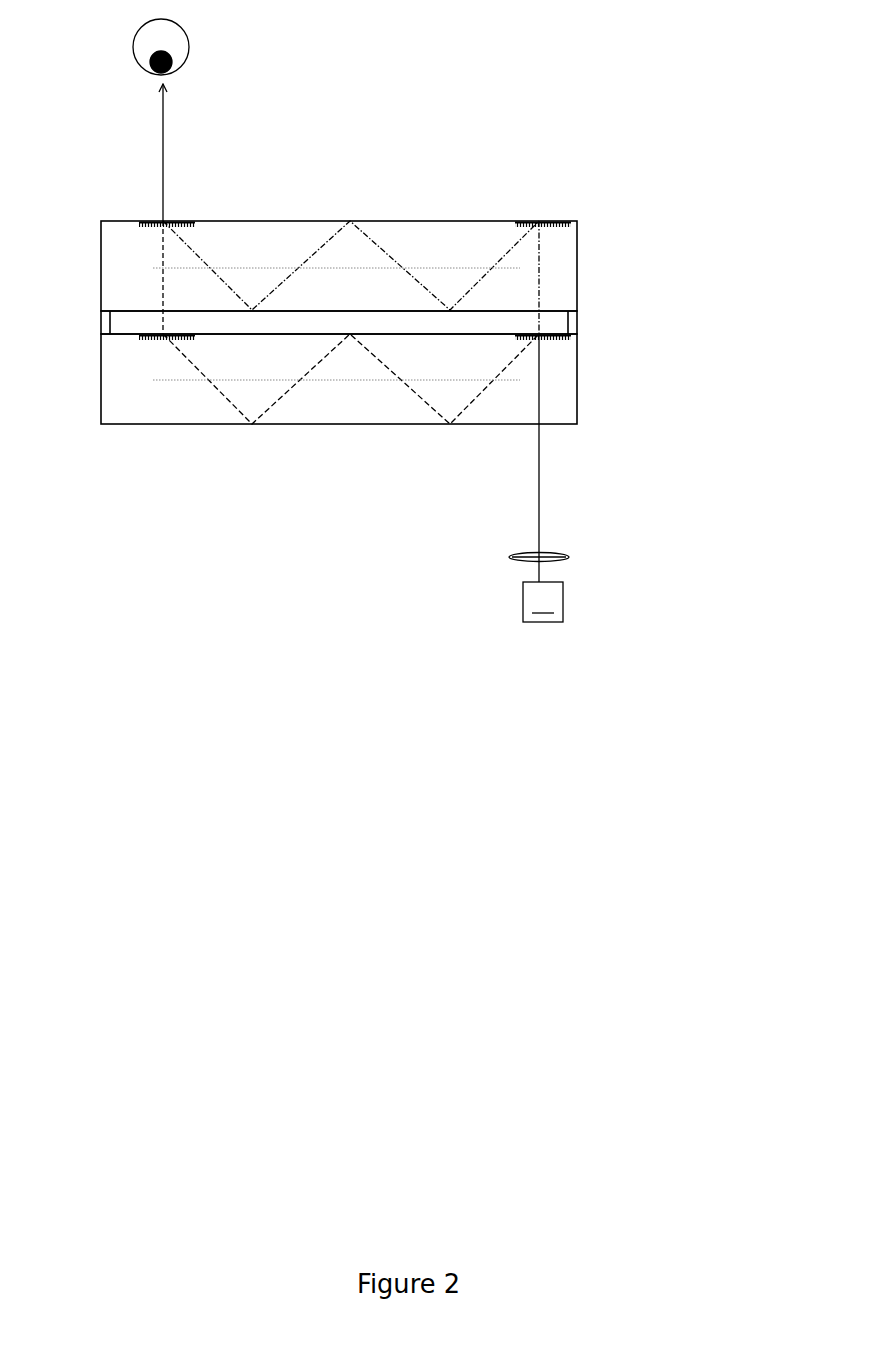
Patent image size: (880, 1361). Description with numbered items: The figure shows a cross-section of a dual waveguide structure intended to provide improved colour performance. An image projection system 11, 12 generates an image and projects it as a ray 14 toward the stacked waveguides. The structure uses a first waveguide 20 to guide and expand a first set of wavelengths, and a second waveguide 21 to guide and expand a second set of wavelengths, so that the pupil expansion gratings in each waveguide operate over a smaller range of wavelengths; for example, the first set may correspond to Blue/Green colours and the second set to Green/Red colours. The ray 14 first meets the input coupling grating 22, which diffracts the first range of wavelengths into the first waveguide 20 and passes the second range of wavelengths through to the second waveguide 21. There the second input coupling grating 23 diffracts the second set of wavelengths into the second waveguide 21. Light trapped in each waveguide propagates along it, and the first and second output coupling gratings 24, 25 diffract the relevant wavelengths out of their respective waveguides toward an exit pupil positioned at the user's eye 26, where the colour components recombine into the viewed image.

The image projection system 11 is at (543, 602).
The image projection system 12 is at (573, 558).
The ray 14 is at (543, 492).
The first waveguide 20 is at (383, 427).
The second waveguide 21 is at (397, 216).
The input coupling grating 22 is at (557, 343).
The second input coupling grating 23 is at (553, 216).
The first output coupling grating 24 is at (143, 344).
The second output coupling grating 25 is at (145, 238).
The user's eye 26 is at (193, 37).